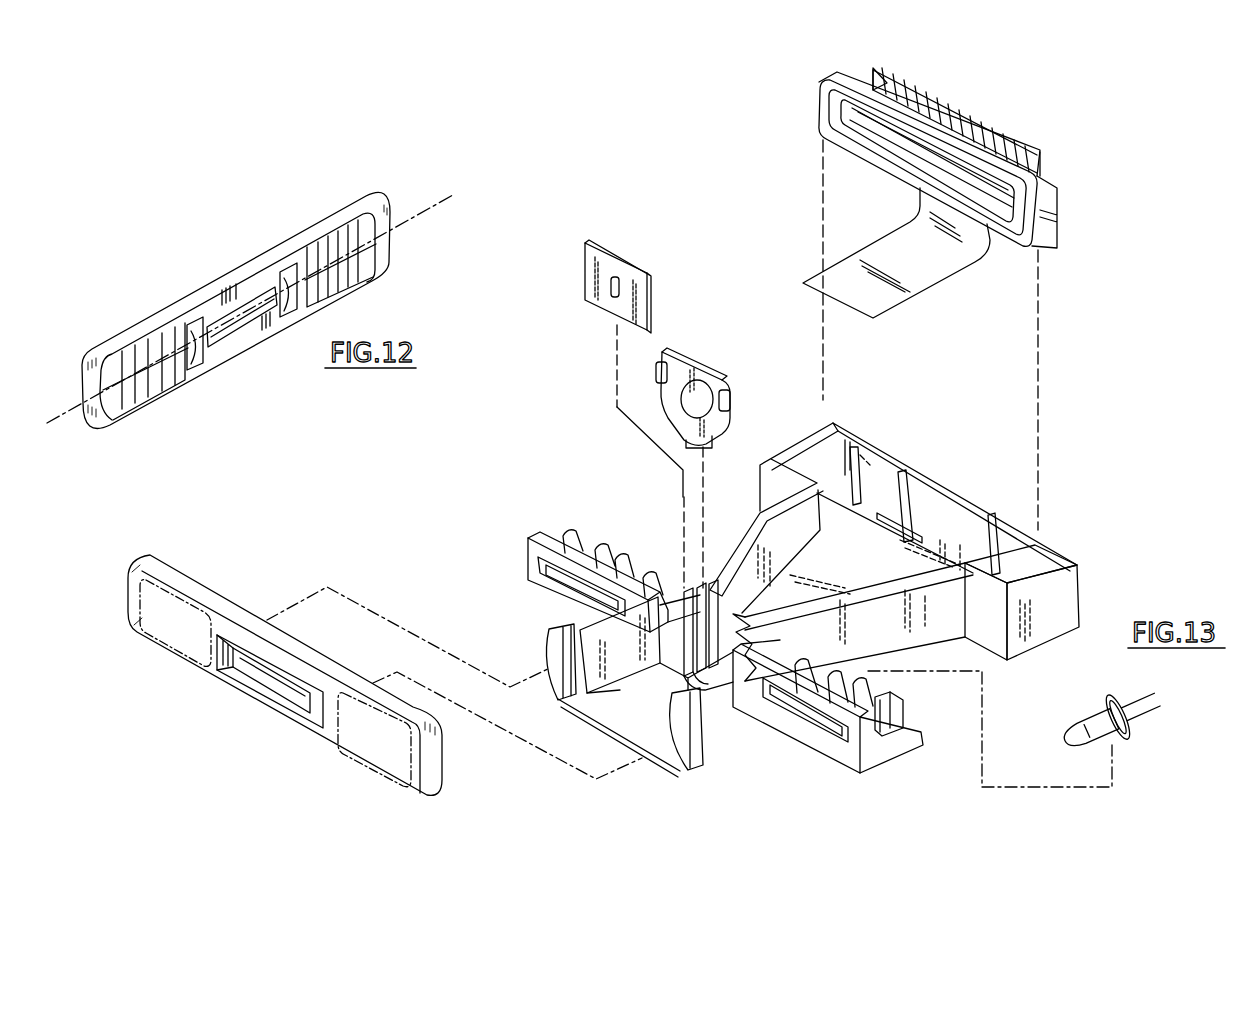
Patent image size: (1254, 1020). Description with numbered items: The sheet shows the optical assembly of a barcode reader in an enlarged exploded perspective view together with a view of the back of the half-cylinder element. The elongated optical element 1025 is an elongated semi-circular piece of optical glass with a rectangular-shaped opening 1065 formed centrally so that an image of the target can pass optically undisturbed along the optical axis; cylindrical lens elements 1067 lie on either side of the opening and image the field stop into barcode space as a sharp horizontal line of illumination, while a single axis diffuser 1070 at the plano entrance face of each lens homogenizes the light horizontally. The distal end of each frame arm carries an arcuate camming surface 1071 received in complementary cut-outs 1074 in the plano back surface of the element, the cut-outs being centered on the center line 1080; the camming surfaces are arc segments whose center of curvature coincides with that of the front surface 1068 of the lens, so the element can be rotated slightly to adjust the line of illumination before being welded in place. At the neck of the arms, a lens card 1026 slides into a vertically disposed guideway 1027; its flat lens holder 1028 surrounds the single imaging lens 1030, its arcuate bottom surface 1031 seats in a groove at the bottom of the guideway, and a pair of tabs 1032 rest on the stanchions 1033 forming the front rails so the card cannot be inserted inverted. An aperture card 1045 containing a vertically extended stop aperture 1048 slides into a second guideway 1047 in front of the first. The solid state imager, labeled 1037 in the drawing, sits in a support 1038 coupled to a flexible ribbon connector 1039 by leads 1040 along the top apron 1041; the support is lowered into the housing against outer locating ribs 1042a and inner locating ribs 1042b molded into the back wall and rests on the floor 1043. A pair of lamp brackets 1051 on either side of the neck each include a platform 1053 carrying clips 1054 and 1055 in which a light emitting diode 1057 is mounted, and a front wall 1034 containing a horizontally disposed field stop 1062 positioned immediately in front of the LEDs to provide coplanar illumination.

In FIG. 12, the elongated optical element 1025 is at (334, 184).
In FIG. 13, the elongated optical element 1025 is at (196, 570).
In FIG. 13, the lens card 1026 is at (679, 347).
In FIG. 13, the guideway 1027 is at (696, 540).
In FIG. 13, the lens holder 1028 is at (712, 444).
In FIG. 13, the imaging lens 1030 is at (708, 386).
In FIG. 13, the bottom surface 1031 is at (676, 424).
In FIG. 13, the tabs 1032 is at (656, 372).
In FIG. 13, the stanchions 1033 is at (663, 653).
In FIG. 13, the front wall 1034 is at (807, 734).
In FIG. 13, the connector slot 1037 is at (862, 140).
In FIG. 13, the support 1038 is at (1060, 204).
In FIG. 13, the flexible ribbon connector 1039 is at (930, 274).
In FIG. 13, the leads 1040 is at (917, 93).
In FIG. 13, the top apron 1041 is at (1040, 178).
In FIG. 13, the outer locating ribs 1042a is at (847, 443).
In FIG. 13, the inner locating ribs 1042b is at (893, 480).
In FIG. 13, the floor 1043 is at (920, 560).
In FIG. 13, the aperture card 1045 is at (628, 244).
In FIG. 13, the second guideway 1047 is at (657, 682).
In FIG. 13, the stop aperture 1048 is at (611, 289).
In FIG. 13, the lamp brackets 1051 is at (536, 524).
In FIG. 13, the platform 1053 is at (897, 753).
In FIG. 13, the clip 1054 is at (627, 556).
In FIG. 13, the clip 1055 is at (573, 530).
In FIG. 13, the light emitting diode 1057 is at (1085, 718).
In FIG. 13, the field stop 1062 is at (538, 588).
In FIG. 12, the rectangular-shaped opening 1065 is at (226, 336).
In FIG. 13, the rectangular-shaped opening 1065 is at (280, 697).
In FIG. 13, the cylindrical lens elements 1067 is at (170, 662).
In FIG. 13, the front surface 1068 is at (145, 605).
In FIG. 12, the single axis diffuser 1070 is at (367, 258).
In FIG. 13, the camming surface 1071 is at (547, 656).
In FIG. 12, the cut-outs 1074 is at (287, 265).
In FIG. 12, the center line 1080 is at (425, 210).